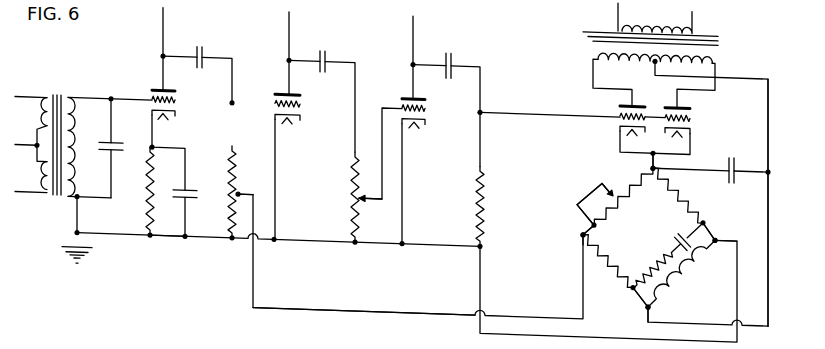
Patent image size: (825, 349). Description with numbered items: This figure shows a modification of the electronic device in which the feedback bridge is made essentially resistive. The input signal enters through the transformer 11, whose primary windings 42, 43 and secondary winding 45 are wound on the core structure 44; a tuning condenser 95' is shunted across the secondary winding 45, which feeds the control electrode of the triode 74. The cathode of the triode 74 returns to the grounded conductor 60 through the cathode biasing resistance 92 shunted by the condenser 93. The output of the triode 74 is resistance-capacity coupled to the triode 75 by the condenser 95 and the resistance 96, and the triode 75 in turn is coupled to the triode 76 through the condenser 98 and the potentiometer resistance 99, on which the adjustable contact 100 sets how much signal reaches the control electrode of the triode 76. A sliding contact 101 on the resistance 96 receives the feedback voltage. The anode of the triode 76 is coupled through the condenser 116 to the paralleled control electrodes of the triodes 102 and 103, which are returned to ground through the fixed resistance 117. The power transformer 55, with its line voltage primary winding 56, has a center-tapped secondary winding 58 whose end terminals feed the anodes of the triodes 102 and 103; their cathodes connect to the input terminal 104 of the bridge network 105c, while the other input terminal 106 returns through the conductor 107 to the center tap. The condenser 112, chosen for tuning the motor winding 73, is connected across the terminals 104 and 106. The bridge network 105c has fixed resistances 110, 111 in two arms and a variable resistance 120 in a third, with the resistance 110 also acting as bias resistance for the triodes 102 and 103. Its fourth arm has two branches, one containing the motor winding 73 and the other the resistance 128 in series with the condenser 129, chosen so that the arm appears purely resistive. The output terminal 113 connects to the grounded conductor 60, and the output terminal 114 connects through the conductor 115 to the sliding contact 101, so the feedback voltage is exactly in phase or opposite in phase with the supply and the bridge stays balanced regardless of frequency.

The transformer 11 is at (57, 85).
The primary winding 42 is at (40, 118).
The primary winding 43 is at (40, 170).
The core structure 44 is at (61, 196).
The secondary winding 45 is at (80, 157).
The transformer 55 is at (583, 13).
The line voltage primary winding 56 is at (618, 0).
The secondary winding 58 is at (634, 42).
The grounded conductor 60 is at (164, 232).
The motor winding 73 is at (678, 280).
The triode 74 is at (153, 85).
The triode 75 is at (278, 86).
The triode 76 is at (405, 89).
The cathode biasing resistance 92 is at (145, 200).
The condenser 93 is at (197, 189).
The condenser 95 is at (212, 48).
The tuning condenser 95' is at (122, 132).
The resistance 96 is at (227, 179).
The condenser 98 is at (324, 42).
The potentiometer resistance 99 is at (348, 189).
The contact 100 is at (240, 184).
The sliding contact 101 is at (362, 190).
The triode 102 is at (612, 89).
The triode 103 is at (690, 94).
The input terminal 104 is at (653, 146).
The bridge network 105c is at (650, 213).
The input terminal 106 is at (648, 286).
The conductor 107 is at (768, 101).
The fixed resistance 110 is at (686, 171).
The fixed resistance 111 is at (609, 255).
The condenser 112 is at (728, 132).
The output terminal 113 is at (718, 215).
The output terminal 114 is at (583, 215).
The conductor 115 is at (342, 300).
The condenser 116 is at (450, 45).
The fixed resistance 117 is at (474, 189).
The variable resistance 120 is at (609, 162).
The resistance 128 is at (655, 240).
The condenser 129 is at (677, 220).